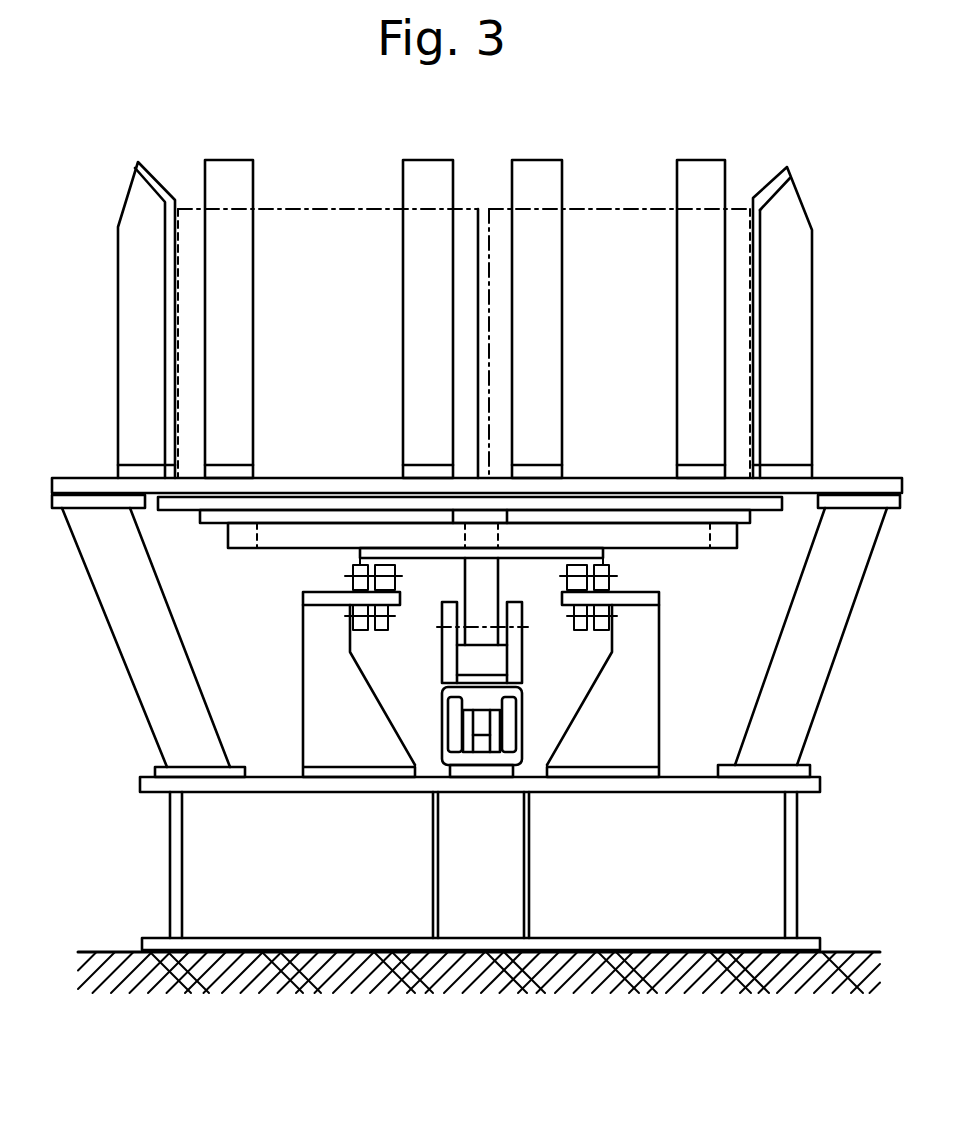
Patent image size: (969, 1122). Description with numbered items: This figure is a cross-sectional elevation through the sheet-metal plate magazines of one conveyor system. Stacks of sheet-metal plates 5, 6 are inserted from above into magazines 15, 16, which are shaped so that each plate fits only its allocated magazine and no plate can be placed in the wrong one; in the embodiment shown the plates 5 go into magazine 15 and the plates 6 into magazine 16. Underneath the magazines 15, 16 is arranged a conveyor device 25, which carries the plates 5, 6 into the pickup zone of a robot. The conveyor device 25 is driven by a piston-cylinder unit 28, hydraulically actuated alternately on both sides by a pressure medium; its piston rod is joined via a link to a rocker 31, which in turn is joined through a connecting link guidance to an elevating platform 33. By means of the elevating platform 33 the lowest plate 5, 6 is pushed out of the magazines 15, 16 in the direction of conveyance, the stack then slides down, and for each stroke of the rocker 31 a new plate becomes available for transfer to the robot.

The sheet-metal plate 5 is at (313, 207).
The sheet-metal plate 6 is at (622, 207).
The magazine 15 is at (112, 222).
The magazine 16 is at (806, 178).
The conveyor device 25 is at (132, 700).
The piston-cylinder unit 28 is at (522, 717).
The rocker 31 is at (523, 650).
The elevating platform 33 is at (500, 573).